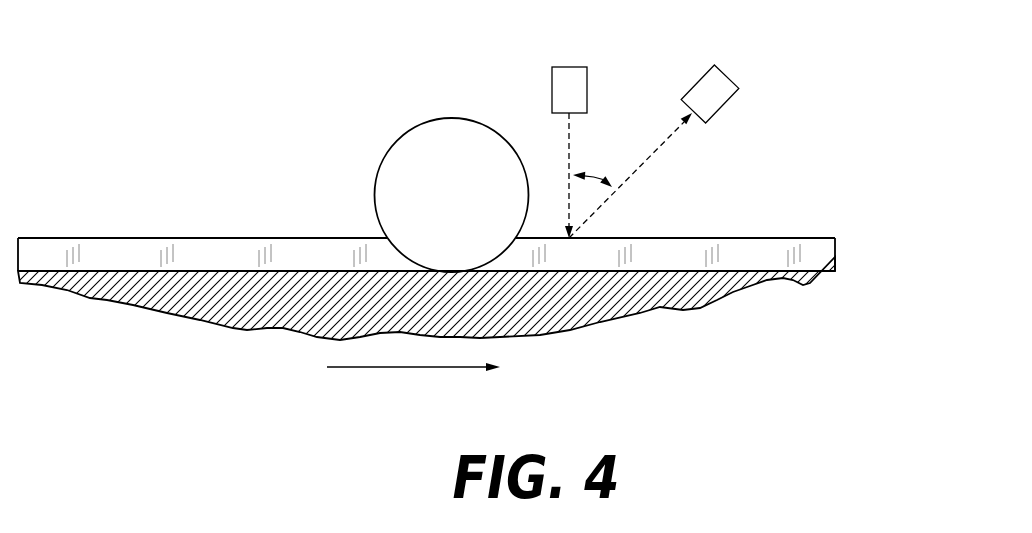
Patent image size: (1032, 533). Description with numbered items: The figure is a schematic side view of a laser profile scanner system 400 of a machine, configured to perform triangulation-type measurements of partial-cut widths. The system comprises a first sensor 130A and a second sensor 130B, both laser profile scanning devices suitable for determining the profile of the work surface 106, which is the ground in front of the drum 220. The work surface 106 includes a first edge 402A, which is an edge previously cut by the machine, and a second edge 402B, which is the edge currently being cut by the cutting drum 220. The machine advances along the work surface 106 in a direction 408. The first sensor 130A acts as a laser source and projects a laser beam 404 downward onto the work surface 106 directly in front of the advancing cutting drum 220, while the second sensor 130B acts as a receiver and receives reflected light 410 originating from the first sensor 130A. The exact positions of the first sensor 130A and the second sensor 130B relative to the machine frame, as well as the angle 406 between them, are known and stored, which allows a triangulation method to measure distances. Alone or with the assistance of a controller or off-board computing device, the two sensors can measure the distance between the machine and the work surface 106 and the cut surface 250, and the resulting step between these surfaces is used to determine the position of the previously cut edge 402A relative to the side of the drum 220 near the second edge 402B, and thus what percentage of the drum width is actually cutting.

The laser profile scanner system 400 is at (820, 52).
The work surface 106 is at (822, 239).
The cut surface 250 is at (100, 238).
The second edge 402B is at (195, 245).
The first edge 402A is at (756, 265).
The drum 220 is at (374, 183).
The first sensor 130A is at (570, 72).
The second sensor 130B is at (705, 87).
The laser beam 404 is at (569, 137).
The angle 406 is at (597, 180).
The reflected light 410 is at (653, 150).
The direction 408 is at (408, 370).